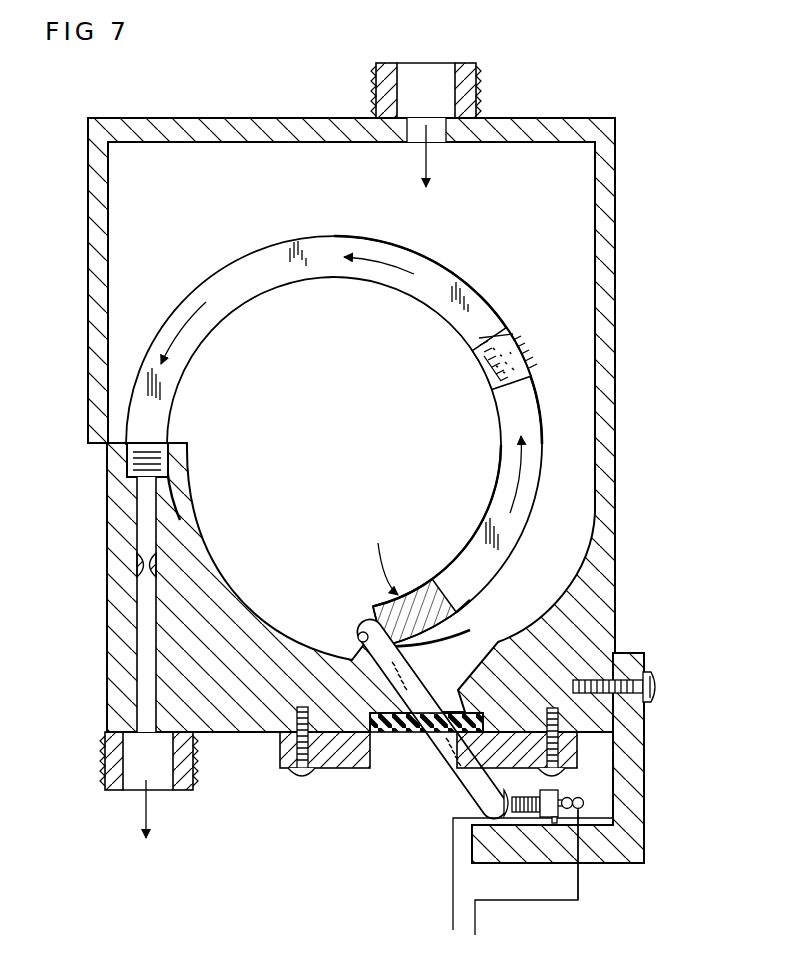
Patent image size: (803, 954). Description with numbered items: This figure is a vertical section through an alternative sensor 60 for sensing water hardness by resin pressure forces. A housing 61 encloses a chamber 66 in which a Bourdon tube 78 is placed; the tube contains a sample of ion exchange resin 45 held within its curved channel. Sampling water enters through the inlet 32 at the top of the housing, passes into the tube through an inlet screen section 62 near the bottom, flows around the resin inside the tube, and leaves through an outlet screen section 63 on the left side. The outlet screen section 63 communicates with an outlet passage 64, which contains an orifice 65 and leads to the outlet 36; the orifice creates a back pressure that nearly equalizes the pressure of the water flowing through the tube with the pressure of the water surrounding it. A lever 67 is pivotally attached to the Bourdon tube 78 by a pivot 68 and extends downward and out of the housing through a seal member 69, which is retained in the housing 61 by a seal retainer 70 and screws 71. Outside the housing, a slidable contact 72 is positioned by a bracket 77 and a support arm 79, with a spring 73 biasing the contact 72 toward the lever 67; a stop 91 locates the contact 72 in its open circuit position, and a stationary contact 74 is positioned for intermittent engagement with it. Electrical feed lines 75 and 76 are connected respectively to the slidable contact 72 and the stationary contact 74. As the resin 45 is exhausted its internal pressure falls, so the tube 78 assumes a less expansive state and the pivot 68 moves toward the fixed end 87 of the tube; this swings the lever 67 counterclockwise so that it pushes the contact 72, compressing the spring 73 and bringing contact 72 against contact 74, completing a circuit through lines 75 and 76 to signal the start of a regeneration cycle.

The inlet 32 is at (376, 78).
The outlet 36 is at (107, 775).
The sensor 60 is at (620, 231).
The housing 61 is at (610, 388).
The chamber 66 is at (568, 192).
The Bourdon tube 78 is at (453, 306).
The ion exchange resin 45 is at (512, 358).
The fixed end 87 is at (150, 464).
The outlet screen section 63 is at (129, 464).
The orifice 65 is at (140, 562).
The outlet passage 64 is at (150, 627).
The inlet screen section 62 is at (410, 601).
The pivot 68 is at (359, 629).
The lever 67 is at (462, 768).
The seal member 69 is at (413, 733).
The seal retainer 70 is at (282, 753).
The screws 71 is at (300, 777).
The spring 73 is at (542, 777).
The contact 72 is at (590, 777).
The bracket 77 is at (637, 793).
The contact 74 is at (580, 805).
The electrical feed line 75 is at (453, 850).
The support arm 79 is at (550, 817).
The stop 91 is at (555, 820).
The electrical feed line 76 is at (475, 925).